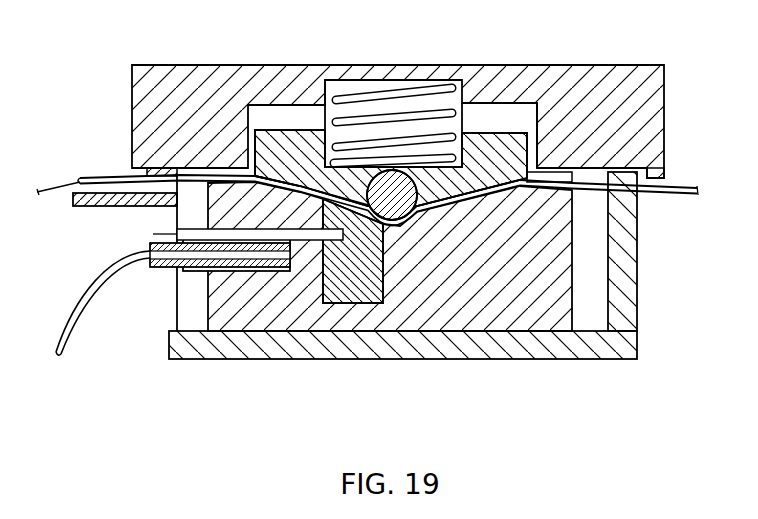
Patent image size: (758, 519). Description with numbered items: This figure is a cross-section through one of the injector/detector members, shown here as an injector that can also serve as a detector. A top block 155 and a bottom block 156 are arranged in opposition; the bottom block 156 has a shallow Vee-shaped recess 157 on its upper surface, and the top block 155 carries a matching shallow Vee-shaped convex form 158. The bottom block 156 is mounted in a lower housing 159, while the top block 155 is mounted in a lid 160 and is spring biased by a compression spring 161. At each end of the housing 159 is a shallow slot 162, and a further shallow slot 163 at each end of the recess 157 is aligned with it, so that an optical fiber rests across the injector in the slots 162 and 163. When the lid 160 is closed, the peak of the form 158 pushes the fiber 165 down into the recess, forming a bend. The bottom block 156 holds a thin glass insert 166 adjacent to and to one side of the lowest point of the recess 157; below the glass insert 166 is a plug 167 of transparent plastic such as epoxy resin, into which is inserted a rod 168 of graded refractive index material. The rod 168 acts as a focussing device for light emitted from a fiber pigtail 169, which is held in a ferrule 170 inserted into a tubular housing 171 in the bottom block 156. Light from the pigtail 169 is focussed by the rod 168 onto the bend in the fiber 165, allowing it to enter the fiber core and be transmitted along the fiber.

The top block 155 is at (313, 142).
The bottom block 156 is at (547, 312).
The Vee-shaped recess 157 is at (482, 203).
The Vee-shaped convex form 158 is at (277, 128).
The lower housing 159 is at (620, 305).
The lid 160 is at (160, 88).
The compression spring 161 is at (395, 92).
The shallow slot 162 is at (150, 165).
The shallow slot 163 is at (195, 208).
The fiber 165 is at (112, 177).
The glass insert 166 is at (388, 232).
The plug 167 is at (347, 295).
The rod 168 is at (313, 280).
The fiber pigtail 169 is at (67, 313).
The ferrule 170 is at (162, 270).
The tubular housing 171 is at (177, 232).